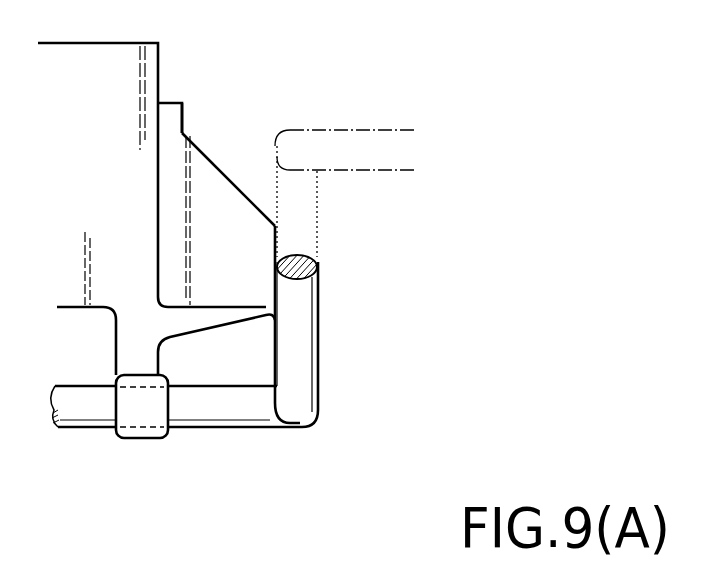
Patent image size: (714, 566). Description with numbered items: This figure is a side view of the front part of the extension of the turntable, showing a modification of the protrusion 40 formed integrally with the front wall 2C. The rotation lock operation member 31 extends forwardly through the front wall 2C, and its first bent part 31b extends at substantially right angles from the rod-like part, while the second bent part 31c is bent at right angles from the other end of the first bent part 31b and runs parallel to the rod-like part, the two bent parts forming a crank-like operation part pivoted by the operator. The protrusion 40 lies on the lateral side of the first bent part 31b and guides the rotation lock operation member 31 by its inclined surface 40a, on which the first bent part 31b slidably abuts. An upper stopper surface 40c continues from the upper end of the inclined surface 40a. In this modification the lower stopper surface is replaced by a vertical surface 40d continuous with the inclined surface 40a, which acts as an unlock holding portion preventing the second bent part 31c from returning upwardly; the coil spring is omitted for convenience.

The front wall 2C is at (158, 228).
The protrusion 40 is at (267, 254).
The inclined surface 40a is at (220, 167).
The upper stopper surface 40c is at (183, 113).
The vertical surface 40d is at (278, 290).
The rotation lock operation member 31 is at (237, 426).
The first bent part 31b is at (317, 295).
The second bent part 31c is at (373, 143).